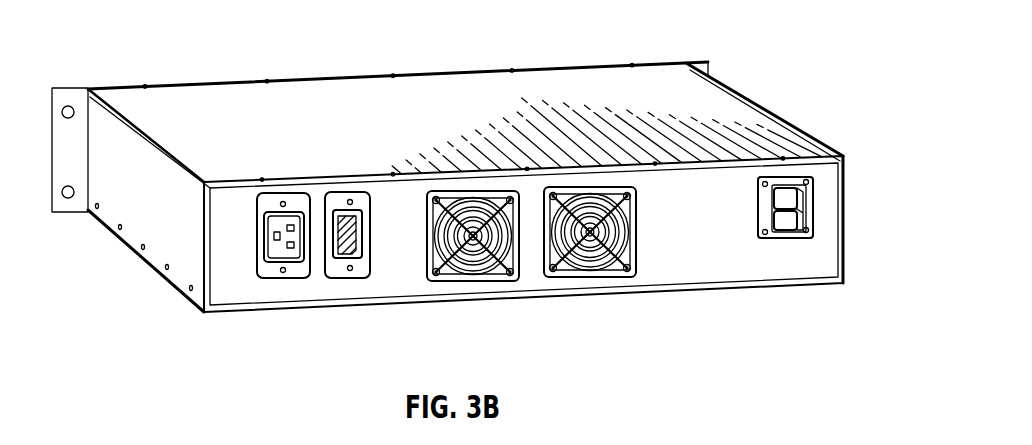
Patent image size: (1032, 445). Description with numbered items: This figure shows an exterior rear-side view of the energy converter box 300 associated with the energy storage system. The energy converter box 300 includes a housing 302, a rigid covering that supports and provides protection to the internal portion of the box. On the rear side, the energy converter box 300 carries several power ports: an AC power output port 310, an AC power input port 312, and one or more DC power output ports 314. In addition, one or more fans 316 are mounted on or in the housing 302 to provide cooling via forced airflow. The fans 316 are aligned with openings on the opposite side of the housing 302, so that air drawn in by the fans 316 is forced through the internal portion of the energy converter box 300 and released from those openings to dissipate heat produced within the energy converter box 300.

The energy converter box 300 is at (114, 43).
The housing 302 is at (750, 103).
The AC power output port 310 is at (298, 270).
The AC power input port 312 is at (362, 270).
The DC power output port 314 is at (810, 222).
The fan 316 is at (513, 275).